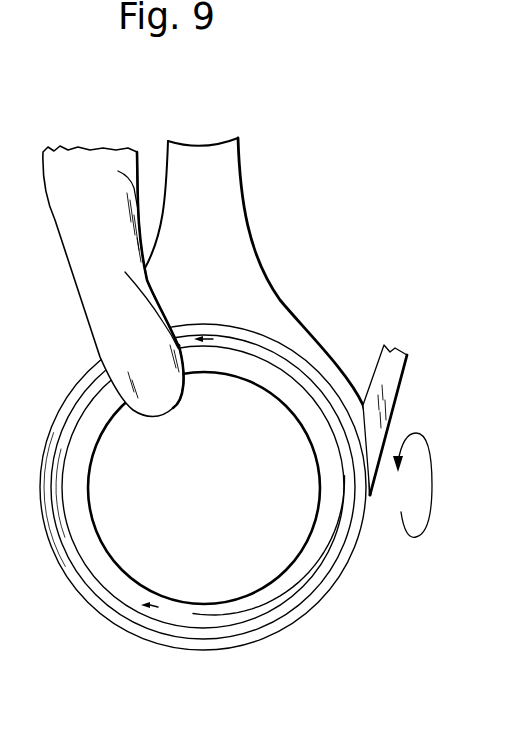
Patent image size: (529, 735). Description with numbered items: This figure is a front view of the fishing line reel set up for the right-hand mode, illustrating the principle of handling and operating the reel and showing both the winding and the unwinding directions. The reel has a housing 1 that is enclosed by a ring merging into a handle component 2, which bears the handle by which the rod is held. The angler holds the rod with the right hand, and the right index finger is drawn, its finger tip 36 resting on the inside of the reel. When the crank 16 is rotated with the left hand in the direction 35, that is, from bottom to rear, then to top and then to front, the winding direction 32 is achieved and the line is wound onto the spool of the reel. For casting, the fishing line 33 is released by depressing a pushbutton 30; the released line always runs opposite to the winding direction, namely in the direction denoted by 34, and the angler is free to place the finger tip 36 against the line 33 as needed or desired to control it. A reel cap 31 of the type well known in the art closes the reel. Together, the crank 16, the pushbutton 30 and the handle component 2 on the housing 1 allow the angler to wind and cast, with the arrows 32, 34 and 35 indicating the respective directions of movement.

The housing 1 is at (58, 548).
The handle component 2 is at (218, 193).
The crank 16 is at (387, 370).
The pushbutton 30 is at (140, 570).
The reel cap 31 is at (291, 582).
The winding direction 32 is at (167, 608).
The fishing line 33 is at (181, 350).
The unwinding direction 34 is at (286, 363).
The crank rotation direction 35 is at (432, 477).
The finger tip 36 is at (137, 330).